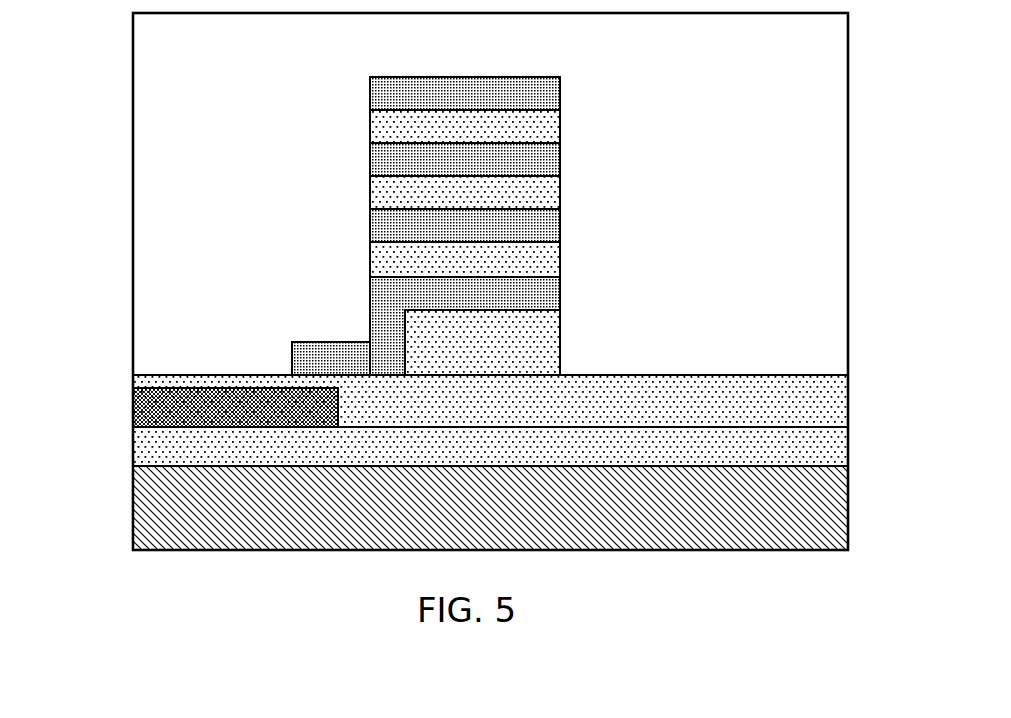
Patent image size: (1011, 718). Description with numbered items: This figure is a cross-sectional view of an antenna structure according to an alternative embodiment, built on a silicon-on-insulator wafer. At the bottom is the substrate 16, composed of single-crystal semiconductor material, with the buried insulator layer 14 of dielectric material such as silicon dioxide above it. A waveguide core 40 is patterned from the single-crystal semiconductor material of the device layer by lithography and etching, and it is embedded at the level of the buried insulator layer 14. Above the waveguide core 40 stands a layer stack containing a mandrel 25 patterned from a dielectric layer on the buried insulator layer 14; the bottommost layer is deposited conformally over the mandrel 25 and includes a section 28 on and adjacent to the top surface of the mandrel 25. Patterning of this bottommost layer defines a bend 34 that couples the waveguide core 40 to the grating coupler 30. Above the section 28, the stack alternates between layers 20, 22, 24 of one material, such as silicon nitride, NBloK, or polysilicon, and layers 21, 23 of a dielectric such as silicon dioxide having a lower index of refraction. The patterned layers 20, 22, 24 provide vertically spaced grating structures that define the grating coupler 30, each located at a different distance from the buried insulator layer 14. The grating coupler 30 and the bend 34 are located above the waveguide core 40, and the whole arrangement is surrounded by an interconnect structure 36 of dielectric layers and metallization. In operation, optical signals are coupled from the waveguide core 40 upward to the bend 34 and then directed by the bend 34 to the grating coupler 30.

The buried insulator layer 14 is at (818, 449).
The substrate 16 is at (818, 518).
The layer 20 is at (395, 226).
The layer 21 is at (535, 198).
The layer 22 is at (395, 162).
The layer 23 is at (535, 130).
The layer 24 is at (395, 98).
The mandrel 25 is at (485, 346).
The section 28 is at (508, 298).
The grating coupler 30 is at (254, 122).
The bend 34 is at (383, 323).
The interconnect structure 36 is at (152, 163).
The waveguide core 40 is at (158, 405).